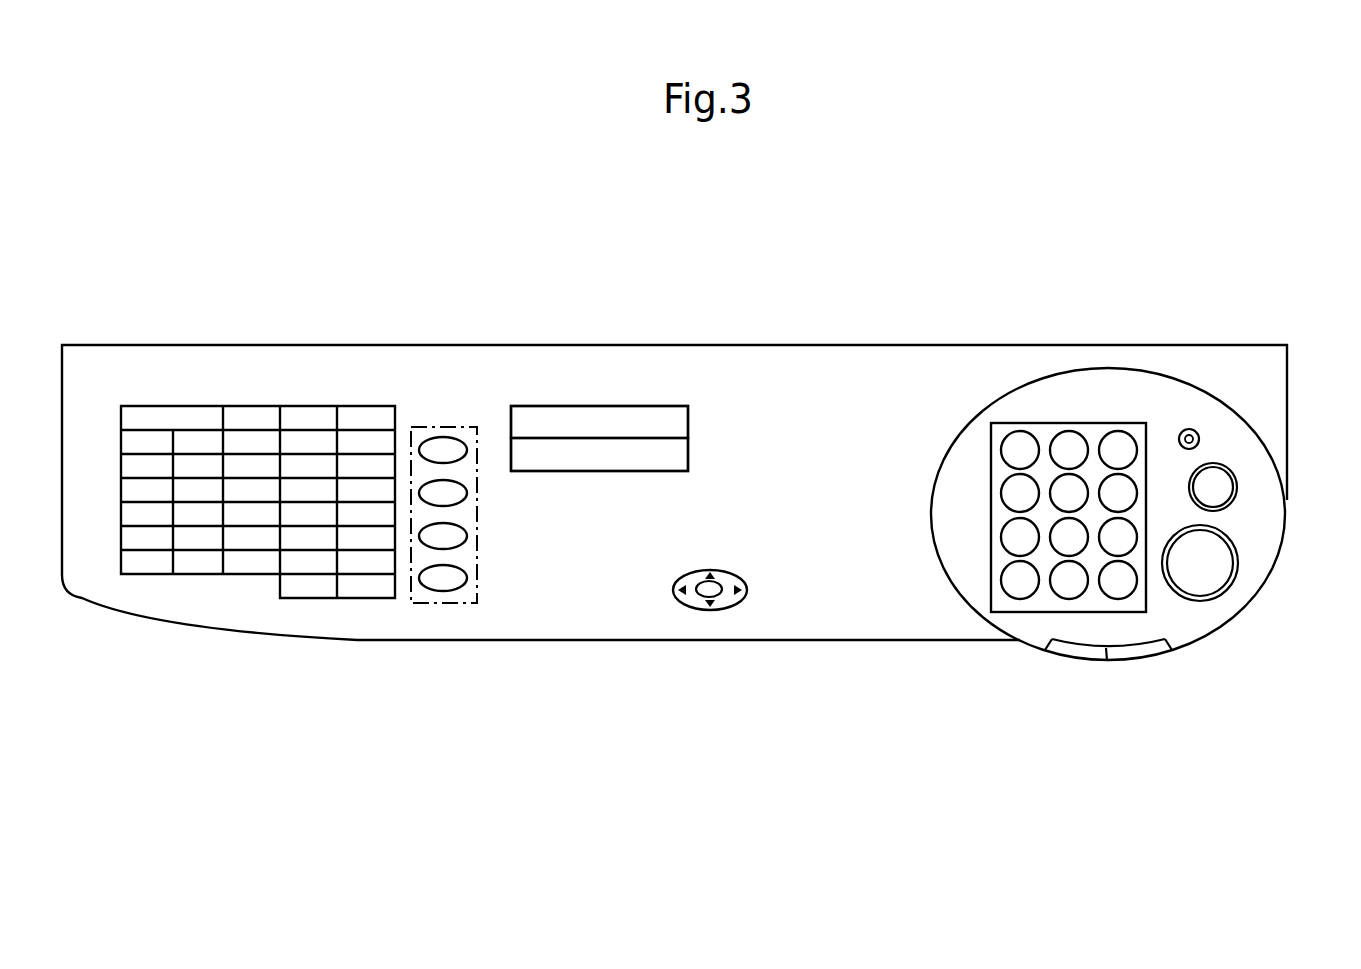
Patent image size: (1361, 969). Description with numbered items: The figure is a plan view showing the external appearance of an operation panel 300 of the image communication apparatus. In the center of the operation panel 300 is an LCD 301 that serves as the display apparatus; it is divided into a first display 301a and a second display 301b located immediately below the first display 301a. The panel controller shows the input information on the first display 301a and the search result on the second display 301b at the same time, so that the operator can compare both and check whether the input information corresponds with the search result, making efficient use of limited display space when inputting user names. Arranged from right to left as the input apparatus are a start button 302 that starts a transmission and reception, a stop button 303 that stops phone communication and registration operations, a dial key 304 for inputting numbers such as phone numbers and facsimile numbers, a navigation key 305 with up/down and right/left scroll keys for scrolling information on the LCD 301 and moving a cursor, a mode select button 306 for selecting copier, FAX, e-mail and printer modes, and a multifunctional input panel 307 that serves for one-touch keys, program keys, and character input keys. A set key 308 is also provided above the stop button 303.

The operation panel 300 is at (878, 280).
The LCD 301 is at (600, 406).
The first display 301a is at (688, 428).
The second display 301b is at (688, 463).
The start button 302 is at (1222, 568).
The stop button 303 is at (1218, 488).
The dial key 304 is at (1084, 423).
The navigation key 305 is at (729, 571).
The mode select button 306 is at (438, 427).
The multifunctional input panel 307 is at (246, 406).
The set key 308 is at (1200, 439).